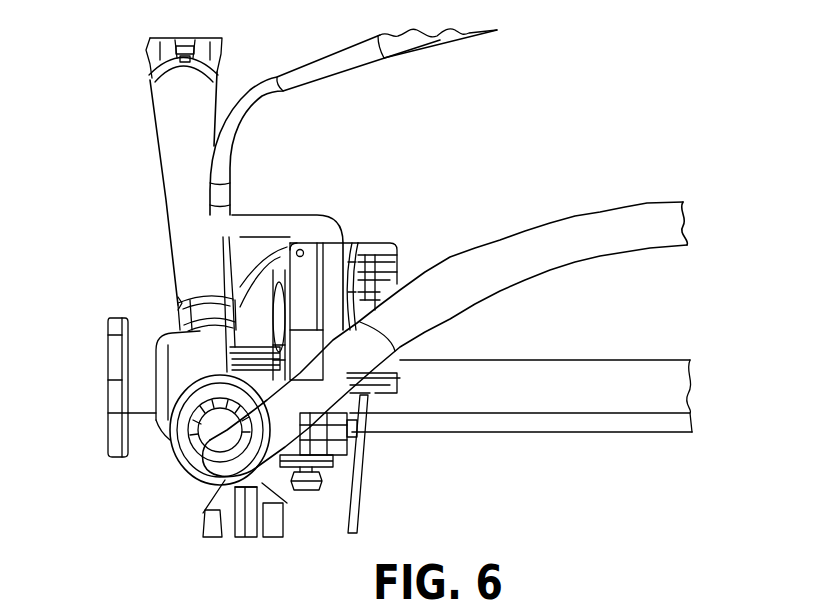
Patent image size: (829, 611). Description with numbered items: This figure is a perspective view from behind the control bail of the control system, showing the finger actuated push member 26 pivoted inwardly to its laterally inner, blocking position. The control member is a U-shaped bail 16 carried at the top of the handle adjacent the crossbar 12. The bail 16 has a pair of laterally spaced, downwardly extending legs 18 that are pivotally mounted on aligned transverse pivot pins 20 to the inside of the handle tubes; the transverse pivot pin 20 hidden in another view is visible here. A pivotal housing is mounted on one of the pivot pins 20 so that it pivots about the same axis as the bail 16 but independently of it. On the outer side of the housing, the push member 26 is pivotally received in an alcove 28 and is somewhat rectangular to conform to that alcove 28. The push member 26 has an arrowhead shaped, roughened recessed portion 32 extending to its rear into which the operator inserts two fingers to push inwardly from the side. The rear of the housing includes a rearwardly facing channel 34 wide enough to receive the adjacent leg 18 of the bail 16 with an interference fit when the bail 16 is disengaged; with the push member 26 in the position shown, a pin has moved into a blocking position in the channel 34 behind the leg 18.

The crossbar 12 is at (627, 240).
The U-shaped bail 16 is at (443, 42).
The legs 18 is at (330, 298).
The transverse pivot pin 20 is at (355, 428).
The push member 26 is at (267, 336).
The alcove 28 is at (250, 280).
The recessed portion 32 is at (276, 318).
The channel 34 is at (352, 243).